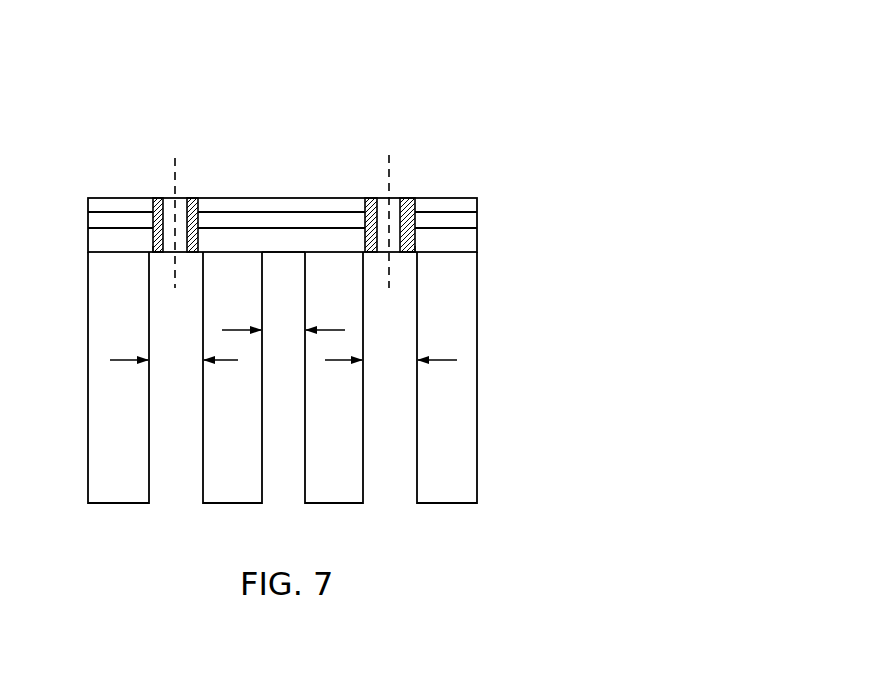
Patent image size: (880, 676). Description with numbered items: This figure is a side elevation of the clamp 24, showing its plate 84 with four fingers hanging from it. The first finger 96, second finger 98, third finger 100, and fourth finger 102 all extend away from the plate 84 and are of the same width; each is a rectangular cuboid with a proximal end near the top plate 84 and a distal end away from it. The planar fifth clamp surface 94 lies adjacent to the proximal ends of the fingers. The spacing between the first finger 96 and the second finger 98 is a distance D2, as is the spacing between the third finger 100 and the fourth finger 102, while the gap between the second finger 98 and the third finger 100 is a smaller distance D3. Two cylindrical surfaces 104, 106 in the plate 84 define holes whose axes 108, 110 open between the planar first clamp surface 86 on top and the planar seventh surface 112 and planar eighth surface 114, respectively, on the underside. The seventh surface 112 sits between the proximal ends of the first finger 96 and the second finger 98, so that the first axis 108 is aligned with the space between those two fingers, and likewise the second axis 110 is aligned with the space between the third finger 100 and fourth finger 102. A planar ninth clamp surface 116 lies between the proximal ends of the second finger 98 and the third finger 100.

The clamp 24 is at (452, 140).
The plate 84 is at (287, 198).
The first clamp surface 86 is at (226, 198).
The fifth clamp surface 94 is at (470, 238).
The first finger 96 is at (95, 428).
The second finger 98 is at (208, 423).
The third finger 100 is at (362, 425).
The fourth finger 102 is at (475, 420).
The cylindrical surface 104 is at (170, 197).
The cylindrical surface 106 is at (383, 198).
The first axis 108 is at (177, 162).
The second axis 110 is at (390, 165).
The seventh surface 112 is at (155, 253).
The eighth surface 114 is at (411, 253).
The ninth clamp surface 116 is at (286, 253).